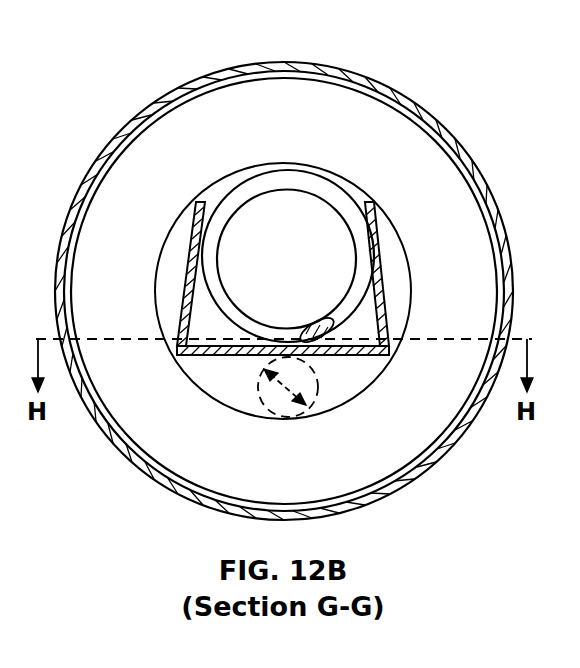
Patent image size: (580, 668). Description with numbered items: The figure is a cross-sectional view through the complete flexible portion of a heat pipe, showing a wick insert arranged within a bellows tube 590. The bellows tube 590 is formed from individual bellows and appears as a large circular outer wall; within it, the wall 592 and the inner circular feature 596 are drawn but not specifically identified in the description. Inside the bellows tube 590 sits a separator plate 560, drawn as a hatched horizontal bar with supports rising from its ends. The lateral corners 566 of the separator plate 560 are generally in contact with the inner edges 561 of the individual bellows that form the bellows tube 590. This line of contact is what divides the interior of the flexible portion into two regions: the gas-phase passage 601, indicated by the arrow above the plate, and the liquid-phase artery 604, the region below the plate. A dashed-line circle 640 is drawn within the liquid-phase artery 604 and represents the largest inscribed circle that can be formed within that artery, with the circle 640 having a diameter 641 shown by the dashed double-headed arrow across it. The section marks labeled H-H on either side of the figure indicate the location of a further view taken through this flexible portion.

The outer wall 592 is at (285, 64).
The bellows tube 590 is at (425, 158).
The liquid-phase artery 604 is at (348, 374).
The inner edges of the individual bellows 561 is at (290, 169).
The lumen 596 is at (214, 222).
The lateral corners of the separator plate 566 is at (179, 356).
The separator plate 560 is at (195, 358).
The dashed-line circle 640 is at (340, 410).
The diameter 641 is at (272, 418).
The gas-phase passage 601 is at (174, 262).